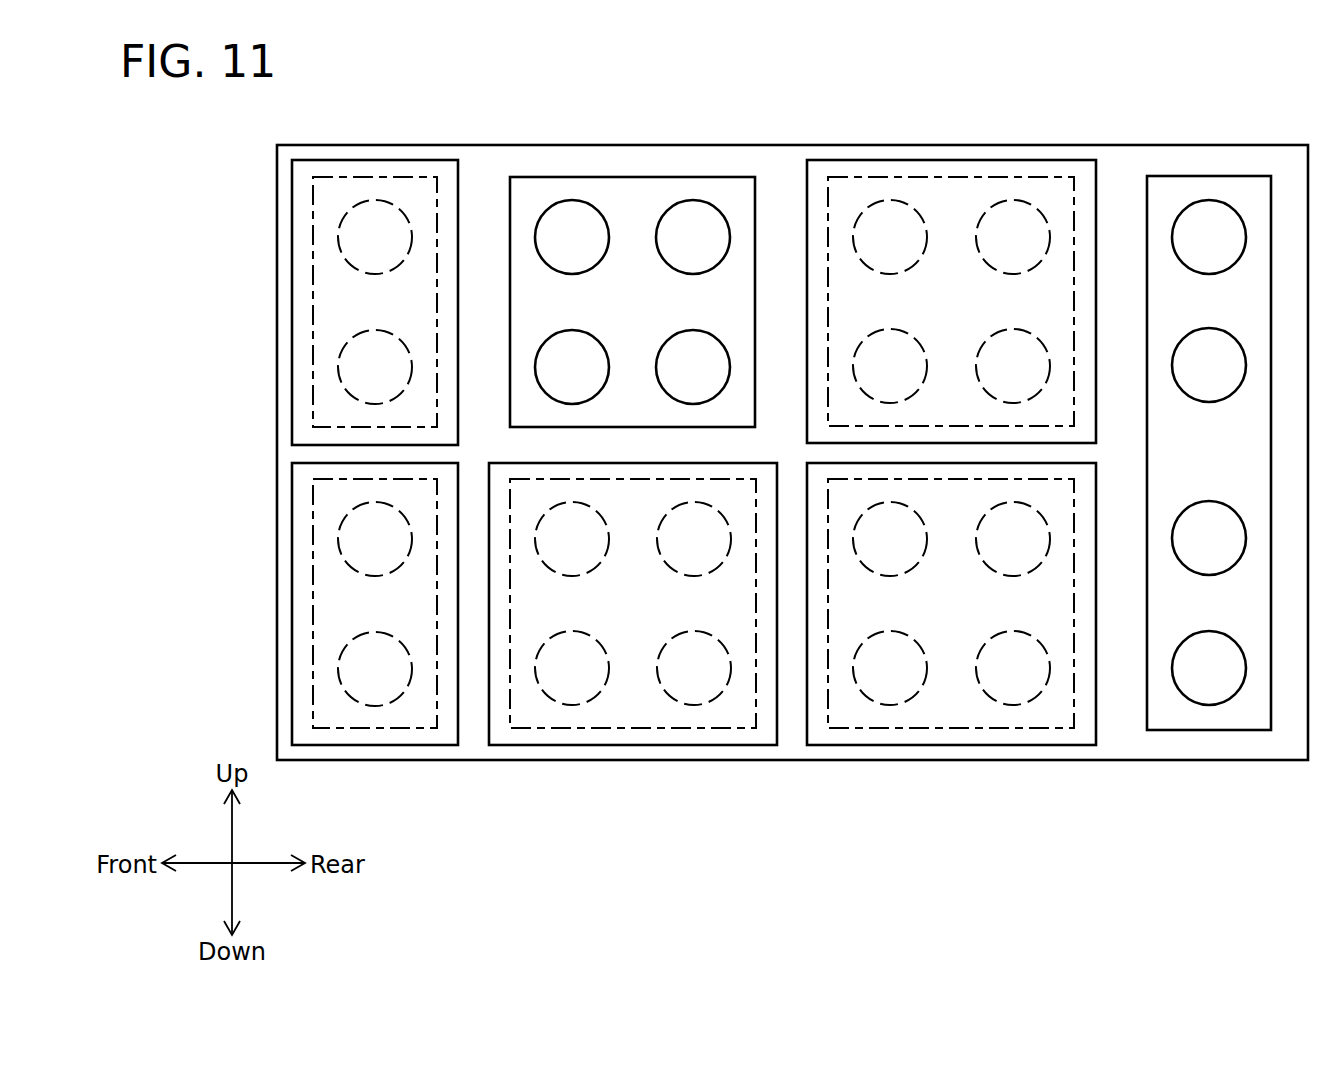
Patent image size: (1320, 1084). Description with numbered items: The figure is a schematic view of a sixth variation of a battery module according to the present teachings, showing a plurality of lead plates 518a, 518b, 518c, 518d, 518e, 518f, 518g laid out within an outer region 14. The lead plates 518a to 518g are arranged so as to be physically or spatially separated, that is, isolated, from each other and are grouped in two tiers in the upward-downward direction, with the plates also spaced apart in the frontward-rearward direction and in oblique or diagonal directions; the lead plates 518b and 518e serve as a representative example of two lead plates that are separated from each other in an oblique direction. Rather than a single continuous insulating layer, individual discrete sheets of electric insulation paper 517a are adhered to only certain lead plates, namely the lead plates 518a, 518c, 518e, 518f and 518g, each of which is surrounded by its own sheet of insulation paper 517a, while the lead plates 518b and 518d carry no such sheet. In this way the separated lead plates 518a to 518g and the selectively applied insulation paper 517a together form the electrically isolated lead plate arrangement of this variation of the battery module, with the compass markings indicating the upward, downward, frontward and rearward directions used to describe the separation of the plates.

The housing 14 is at (485, 158).
The electric insulation paper 517a is at (333, 165).
The lead plate 518a is at (373, 188).
The lead plate 518b is at (613, 190).
The lead plate 518c is at (955, 185).
The lead plate 518d is at (1210, 190).
The lead plate 518e is at (972, 718).
The lead plate 518f is at (652, 718).
The lead plate 518g is at (415, 718).